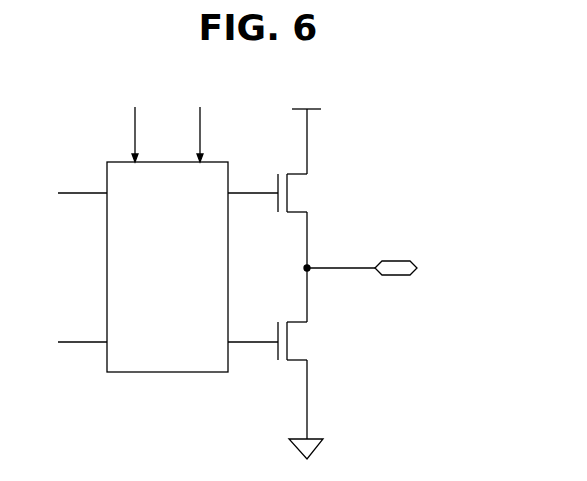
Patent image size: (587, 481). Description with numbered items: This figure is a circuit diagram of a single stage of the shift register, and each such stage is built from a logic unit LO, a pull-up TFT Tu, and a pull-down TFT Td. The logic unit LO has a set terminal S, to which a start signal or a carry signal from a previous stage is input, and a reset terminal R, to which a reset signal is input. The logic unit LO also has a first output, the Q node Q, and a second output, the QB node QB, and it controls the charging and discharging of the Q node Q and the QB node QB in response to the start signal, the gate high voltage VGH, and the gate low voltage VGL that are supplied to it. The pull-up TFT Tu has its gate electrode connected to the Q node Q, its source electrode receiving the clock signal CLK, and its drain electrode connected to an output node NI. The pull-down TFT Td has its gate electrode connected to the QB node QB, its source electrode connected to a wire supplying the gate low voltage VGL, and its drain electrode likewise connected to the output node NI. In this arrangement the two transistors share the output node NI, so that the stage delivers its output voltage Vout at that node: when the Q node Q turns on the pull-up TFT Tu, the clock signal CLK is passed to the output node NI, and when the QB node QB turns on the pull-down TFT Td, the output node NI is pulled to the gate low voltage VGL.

The logic unit LO is at (167, 267).
The set terminal S is at (91, 196).
The reset terminal R is at (91, 345).
The Q node Q is at (243, 196).
The QB node QB is at (237, 345).
The gate high voltage VGH is at (135, 122).
The gate low voltage VGL is at (201, 122).
The clock signal CLK is at (307, 129).
The pull-up TFT Tu is at (306, 221).
The pull-down TFT Td is at (306, 353).
The output node NI is at (294, 269).
The output voltage Vout is at (385, 270).